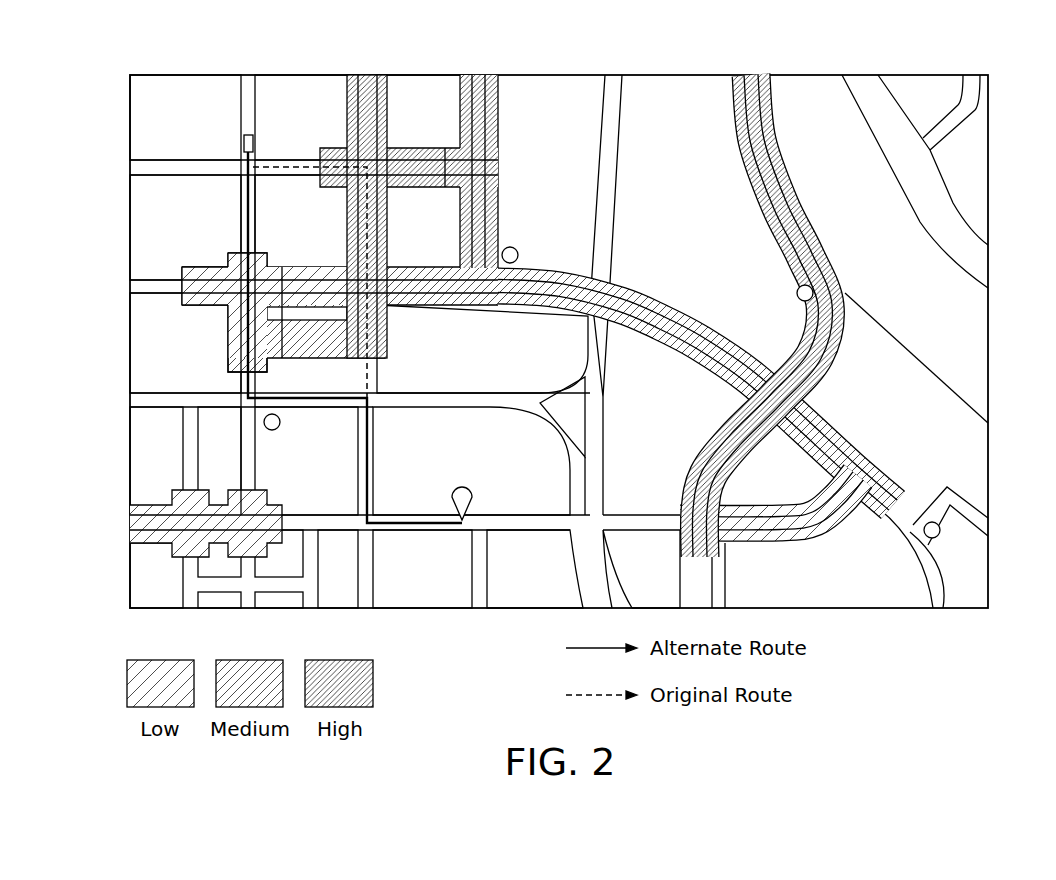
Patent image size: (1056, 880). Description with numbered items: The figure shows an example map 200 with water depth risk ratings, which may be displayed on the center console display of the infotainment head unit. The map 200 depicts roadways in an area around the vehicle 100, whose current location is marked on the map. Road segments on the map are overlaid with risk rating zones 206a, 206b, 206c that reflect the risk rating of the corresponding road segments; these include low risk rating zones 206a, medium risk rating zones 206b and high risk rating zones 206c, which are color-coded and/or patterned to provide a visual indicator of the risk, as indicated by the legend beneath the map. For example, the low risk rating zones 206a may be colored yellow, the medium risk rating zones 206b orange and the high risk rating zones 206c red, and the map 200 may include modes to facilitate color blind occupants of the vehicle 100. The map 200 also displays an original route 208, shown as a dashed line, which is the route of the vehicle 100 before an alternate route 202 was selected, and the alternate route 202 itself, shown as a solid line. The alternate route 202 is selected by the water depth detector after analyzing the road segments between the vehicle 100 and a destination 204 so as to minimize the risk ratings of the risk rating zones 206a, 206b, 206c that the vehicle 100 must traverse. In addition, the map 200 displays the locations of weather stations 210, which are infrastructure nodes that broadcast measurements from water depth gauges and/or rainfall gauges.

The map 200 is at (921, 54).
The vehicle 100 is at (242, 142).
The alternate route 202 is at (255, 222).
The destination 204 is at (462, 487).
The low risk rating zones 206a is at (195, 258).
The medium risk rating zones 206b is at (388, 335).
The high risk rating zones 206c is at (498, 140).
The original route 208 is at (290, 165).
The weather stations 210 is at (518, 256).